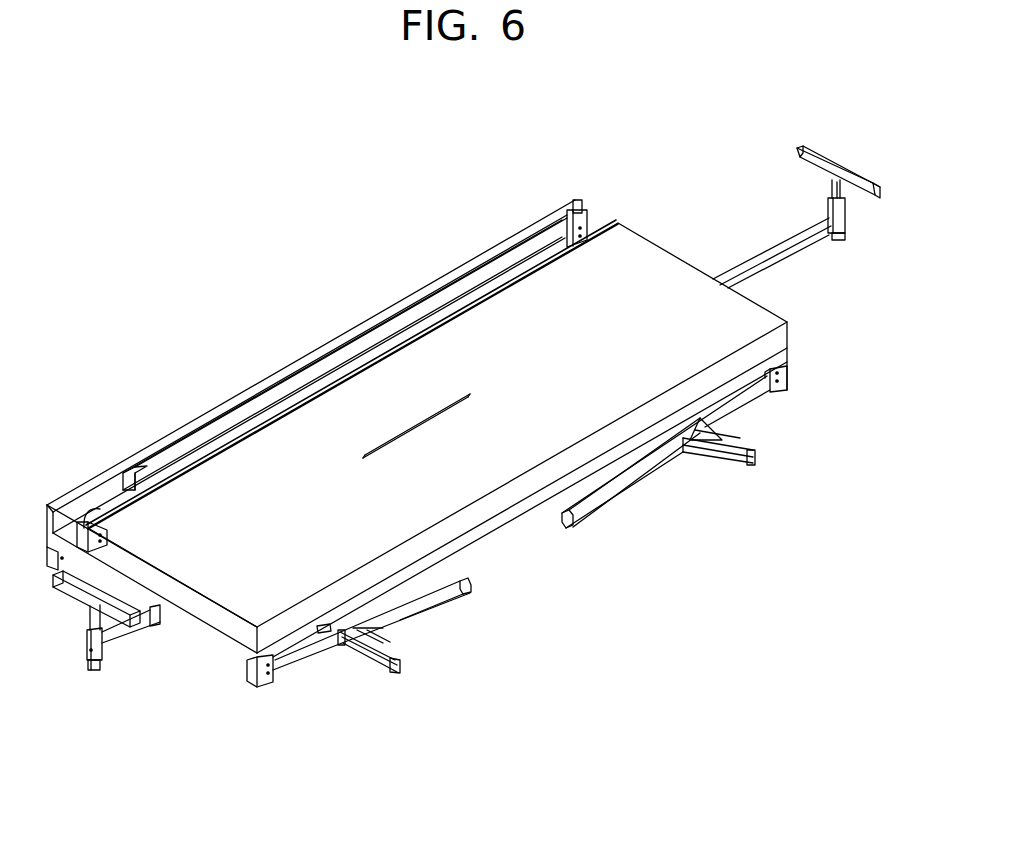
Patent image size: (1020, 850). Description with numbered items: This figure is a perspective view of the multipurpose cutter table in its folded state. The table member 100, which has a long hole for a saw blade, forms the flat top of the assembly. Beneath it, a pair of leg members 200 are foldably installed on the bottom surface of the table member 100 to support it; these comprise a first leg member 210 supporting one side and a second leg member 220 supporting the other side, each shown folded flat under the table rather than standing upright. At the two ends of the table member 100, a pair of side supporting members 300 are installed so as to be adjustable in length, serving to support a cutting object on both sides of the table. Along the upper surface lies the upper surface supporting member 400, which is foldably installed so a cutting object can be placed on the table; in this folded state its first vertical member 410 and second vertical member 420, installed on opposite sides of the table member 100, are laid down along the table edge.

The table member 100 is at (437, 438).
The leg members 200 is at (752, 527).
The first leg member 210 is at (478, 588).
The second leg member 220 is at (585, 513).
The side supporting members 300 is at (756, 216).
The upper surface supporting member 400 is at (127, 323).
The first vertical member 410 is at (310, 383).
The second vertical member 420 is at (317, 365).